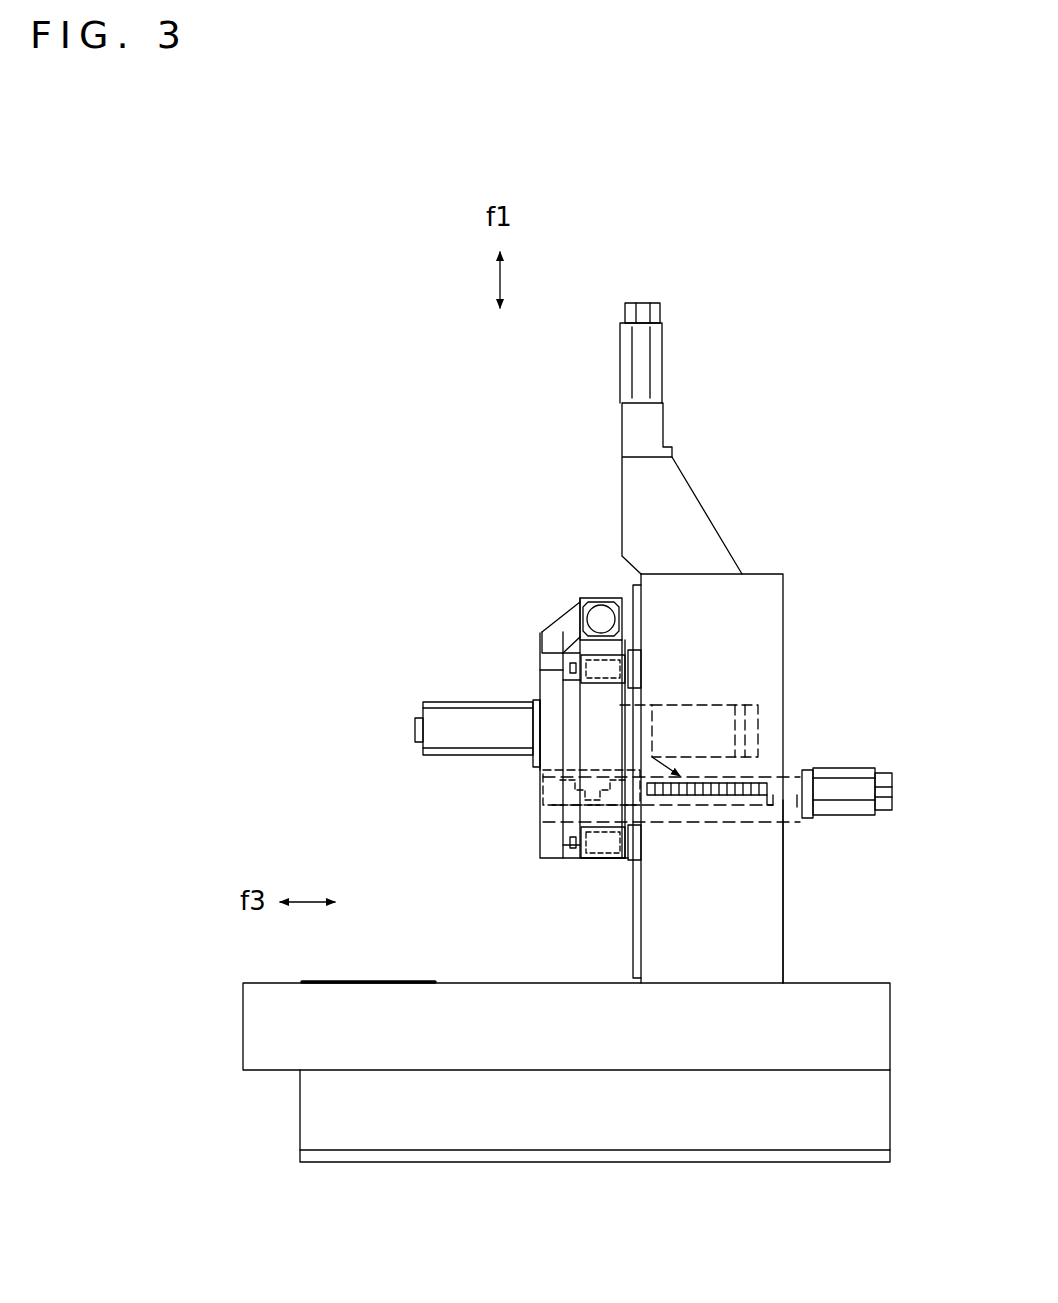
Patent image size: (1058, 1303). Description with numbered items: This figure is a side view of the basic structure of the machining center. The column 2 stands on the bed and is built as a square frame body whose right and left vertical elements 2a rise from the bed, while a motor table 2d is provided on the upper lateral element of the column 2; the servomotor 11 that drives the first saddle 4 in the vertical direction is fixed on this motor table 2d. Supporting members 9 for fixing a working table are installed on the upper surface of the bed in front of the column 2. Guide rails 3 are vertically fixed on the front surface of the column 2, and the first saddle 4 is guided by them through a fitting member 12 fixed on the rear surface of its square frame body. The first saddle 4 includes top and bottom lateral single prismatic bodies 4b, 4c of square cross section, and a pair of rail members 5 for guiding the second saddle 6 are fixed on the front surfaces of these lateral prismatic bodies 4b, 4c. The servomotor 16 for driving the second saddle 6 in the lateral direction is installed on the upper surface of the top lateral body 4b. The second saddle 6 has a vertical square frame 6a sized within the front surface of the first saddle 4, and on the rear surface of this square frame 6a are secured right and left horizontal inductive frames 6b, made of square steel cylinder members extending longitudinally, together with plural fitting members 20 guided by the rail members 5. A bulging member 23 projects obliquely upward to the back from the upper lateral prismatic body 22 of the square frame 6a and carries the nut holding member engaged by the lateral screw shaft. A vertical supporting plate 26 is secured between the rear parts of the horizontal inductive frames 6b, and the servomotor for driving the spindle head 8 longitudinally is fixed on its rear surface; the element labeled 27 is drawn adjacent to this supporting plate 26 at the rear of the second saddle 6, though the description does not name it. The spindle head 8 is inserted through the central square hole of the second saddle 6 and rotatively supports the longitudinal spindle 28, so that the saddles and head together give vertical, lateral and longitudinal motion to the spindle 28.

The column 2 is at (788, 611).
The vertical element 2a is at (770, 930).
The motor table 2d is at (688, 500).
The guide rail 3 is at (633, 955).
The first saddle 4 is at (642, 717).
The top lateral single prismatic body 4b is at (640, 607).
The bottom lateral single prismatic body 4c is at (607, 863).
The rail member 5 is at (556, 680).
The second saddle 6 is at (546, 821).
The vertical square frame 6a is at (552, 742).
The horizontal inductive frame 6b is at (797, 807).
The spindle head 8 is at (507, 702).
The supporting member 9 is at (398, 982).
The servomotor 11 is at (662, 350).
The fitting member 12 is at (642, 660).
The servomotor 16 is at (598, 612).
The fitting member 20 is at (571, 670).
The lateral prismatic body 22 is at (552, 637).
The bulging member 23 is at (563, 617).
The vertical supporting plate 26 is at (808, 768).
The adjusting bolt 27 is at (850, 768).
The spindle 28 is at (415, 730).